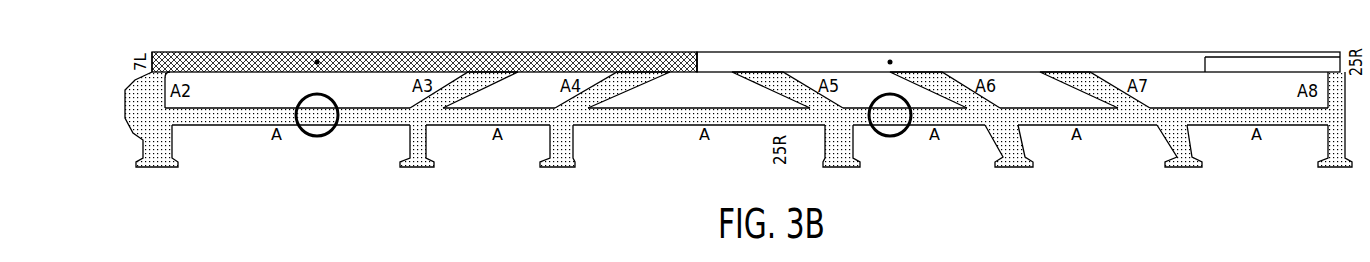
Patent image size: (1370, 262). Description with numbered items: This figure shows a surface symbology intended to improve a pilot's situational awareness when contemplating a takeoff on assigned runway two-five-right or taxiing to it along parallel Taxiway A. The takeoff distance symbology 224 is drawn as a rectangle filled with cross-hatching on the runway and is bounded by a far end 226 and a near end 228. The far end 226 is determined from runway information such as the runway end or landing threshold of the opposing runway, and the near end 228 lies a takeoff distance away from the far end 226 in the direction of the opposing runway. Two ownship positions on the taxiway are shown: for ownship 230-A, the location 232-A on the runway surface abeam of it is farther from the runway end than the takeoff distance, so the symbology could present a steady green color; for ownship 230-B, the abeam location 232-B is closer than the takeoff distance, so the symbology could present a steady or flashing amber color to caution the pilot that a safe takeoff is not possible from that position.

The takeoff distance symbology 224 is at (425, 61).
The far end 226 is at (154, 74).
The near end 228 is at (694, 76).
The ownship 230-A is at (901, 141).
The ownship 230-B is at (328, 141).
The location on the runway surface abeam of ownship 232-A is at (881, 57).
The location on the runway surface abeam of ownship 232-B is at (302, 55).